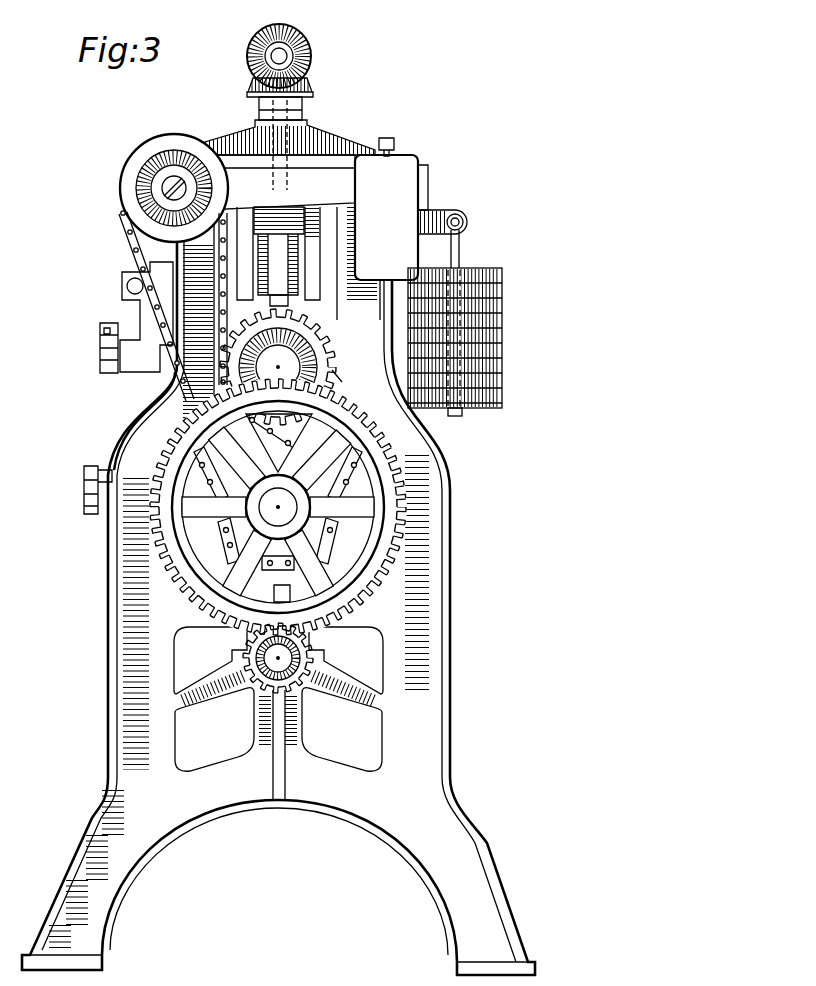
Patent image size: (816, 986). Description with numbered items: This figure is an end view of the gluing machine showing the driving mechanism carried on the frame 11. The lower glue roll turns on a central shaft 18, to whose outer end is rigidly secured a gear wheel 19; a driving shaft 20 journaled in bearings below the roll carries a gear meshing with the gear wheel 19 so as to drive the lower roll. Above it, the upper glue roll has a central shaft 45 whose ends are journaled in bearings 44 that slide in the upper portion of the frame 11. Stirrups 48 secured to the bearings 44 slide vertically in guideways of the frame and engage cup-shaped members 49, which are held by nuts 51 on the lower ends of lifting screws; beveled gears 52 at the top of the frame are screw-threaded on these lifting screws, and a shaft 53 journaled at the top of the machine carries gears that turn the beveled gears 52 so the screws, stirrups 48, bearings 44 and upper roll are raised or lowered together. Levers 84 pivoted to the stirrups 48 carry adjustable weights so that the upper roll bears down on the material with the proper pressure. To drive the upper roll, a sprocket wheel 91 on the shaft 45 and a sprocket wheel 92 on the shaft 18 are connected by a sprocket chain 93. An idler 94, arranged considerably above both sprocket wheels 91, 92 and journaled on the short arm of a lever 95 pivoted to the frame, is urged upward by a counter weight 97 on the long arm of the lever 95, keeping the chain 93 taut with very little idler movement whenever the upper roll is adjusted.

The frame 11 is at (428, 657).
The central shaft 18 is at (341, 507).
The gear wheel 19 is at (388, 527).
The driving shaft 20 is at (278, 660).
The bearings 44 is at (330, 341).
The central shaft 45 is at (273, 367).
The stirrups 48 is at (310, 296).
The cup-shaped members 49 is at (262, 266).
The nuts 51 is at (270, 302).
The beveled gears 52 is at (310, 82).
The shaft 53 is at (306, 44).
The levers 84 is at (440, 213).
The sprocket wheel 91 is at (340, 376).
The sprocket wheel 92 is at (233, 480).
The sprocket chain 93 is at (145, 418).
The idler 94 is at (130, 182).
The lever 95 is at (245, 182).
The counter weight 97 is at (400, 175).